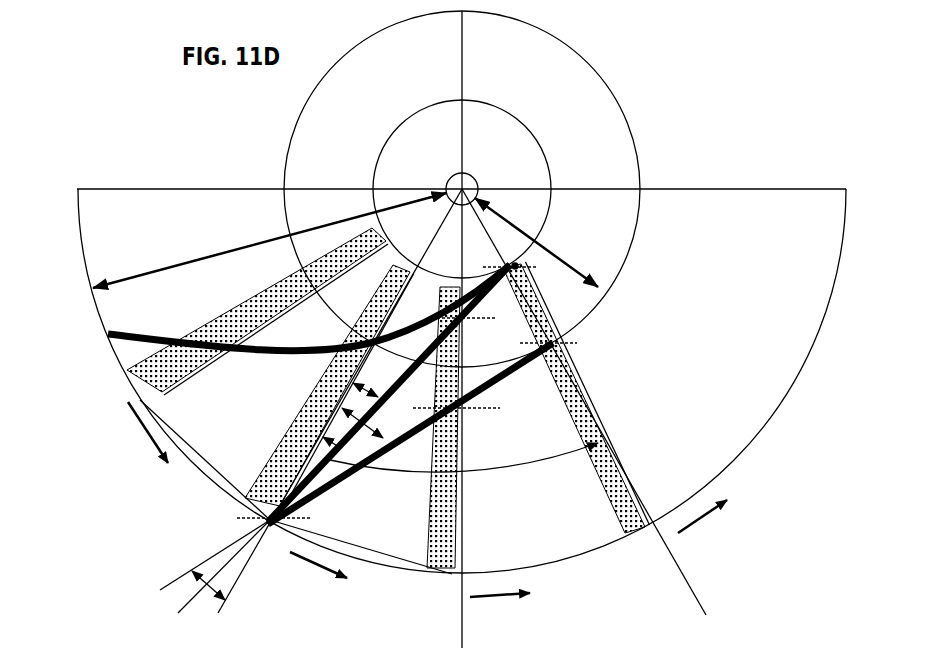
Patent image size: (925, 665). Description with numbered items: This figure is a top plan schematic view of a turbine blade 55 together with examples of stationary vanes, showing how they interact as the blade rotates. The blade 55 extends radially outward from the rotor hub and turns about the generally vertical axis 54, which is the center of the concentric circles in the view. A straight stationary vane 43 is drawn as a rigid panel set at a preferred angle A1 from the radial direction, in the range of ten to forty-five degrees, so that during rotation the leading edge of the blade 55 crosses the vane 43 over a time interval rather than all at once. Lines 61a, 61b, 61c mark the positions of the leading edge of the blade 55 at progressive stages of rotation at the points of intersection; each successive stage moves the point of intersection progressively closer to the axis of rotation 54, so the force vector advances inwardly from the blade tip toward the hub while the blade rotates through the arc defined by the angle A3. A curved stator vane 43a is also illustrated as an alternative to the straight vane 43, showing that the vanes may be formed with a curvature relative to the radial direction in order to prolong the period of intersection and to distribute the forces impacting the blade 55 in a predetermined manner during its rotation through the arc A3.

The vertical axis 54 is at (470, 179).
The turbine blade 55 is at (302, 408).
The stationary vane 43 is at (318, 470).
The curved stator vane 43a is at (108, 334).
The first leading-edge position line 61a is at (271, 530).
The second leading-edge position line 61b is at (483, 327).
The third leading-edge position line 61c is at (528, 273).
The vane angle A1 is at (178, 580).
The intersection arc angle A3 is at (497, 472).